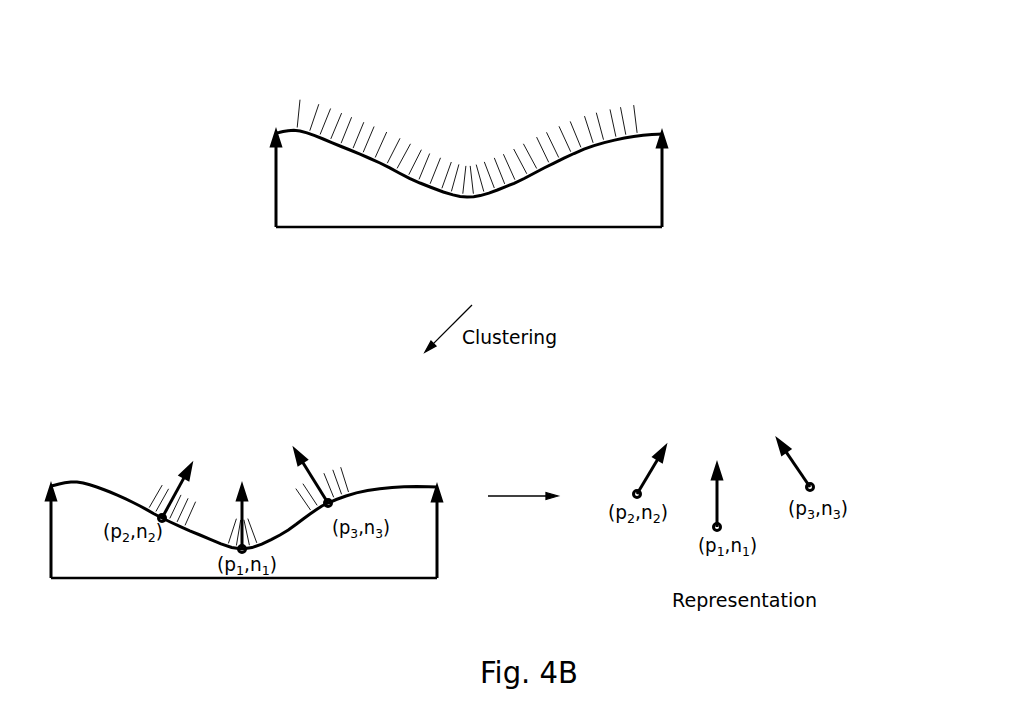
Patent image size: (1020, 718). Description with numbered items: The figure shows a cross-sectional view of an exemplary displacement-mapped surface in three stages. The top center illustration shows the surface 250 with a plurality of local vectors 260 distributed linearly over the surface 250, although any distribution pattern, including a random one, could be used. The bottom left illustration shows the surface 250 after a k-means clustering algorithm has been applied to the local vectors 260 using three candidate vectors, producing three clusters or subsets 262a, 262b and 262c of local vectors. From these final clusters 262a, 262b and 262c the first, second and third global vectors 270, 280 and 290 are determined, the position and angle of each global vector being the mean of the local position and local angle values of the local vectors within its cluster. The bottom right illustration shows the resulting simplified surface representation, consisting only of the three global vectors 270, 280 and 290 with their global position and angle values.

The surface 250 is at (374, 320).
The local vectors 260 is at (420, 145).
The first cluster of local vectors 262a is at (228, 495).
The second cluster of local vectors 262b is at (155, 470).
The third cluster of local vectors 262c is at (345, 470).
The first global vector 270 is at (489, 497).
The second global vector 280 is at (424, 472).
The third global vector 290 is at (550, 461).